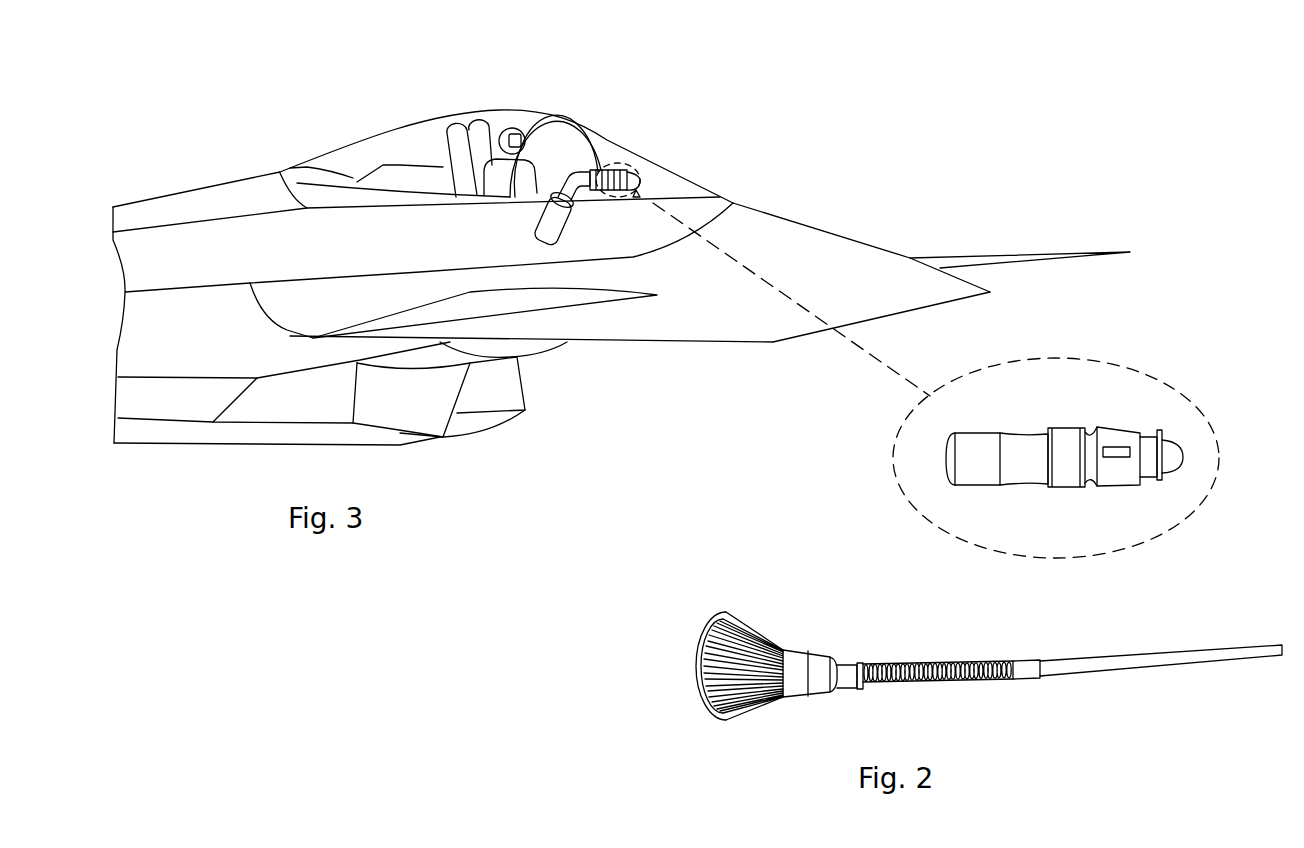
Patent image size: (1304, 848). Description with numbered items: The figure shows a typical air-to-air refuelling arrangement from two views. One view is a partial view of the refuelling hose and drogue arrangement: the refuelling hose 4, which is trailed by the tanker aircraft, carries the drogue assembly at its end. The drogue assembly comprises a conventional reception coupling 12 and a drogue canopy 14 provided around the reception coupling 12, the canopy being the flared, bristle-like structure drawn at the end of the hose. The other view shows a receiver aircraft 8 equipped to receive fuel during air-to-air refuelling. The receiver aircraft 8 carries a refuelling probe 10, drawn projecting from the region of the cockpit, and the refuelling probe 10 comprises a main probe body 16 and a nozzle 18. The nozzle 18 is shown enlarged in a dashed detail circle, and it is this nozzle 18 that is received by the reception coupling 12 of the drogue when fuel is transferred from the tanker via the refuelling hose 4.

In FIG. 3, the receiver aircraft 8 is at (218, 168).
In FIG. 3, the refuelling probe 10 is at (553, 174).
In FIG. 3, the main probe body 16 is at (582, 178).
In FIG. 3, the nozzle 18 is at (1115, 427).
In FIG. 2, the reception coupling 12 is at (797, 650).
In FIG. 2, the drogue canopy 14 is at (700, 656).
In FIG. 2, the refuelling hose 4 is at (1082, 665).